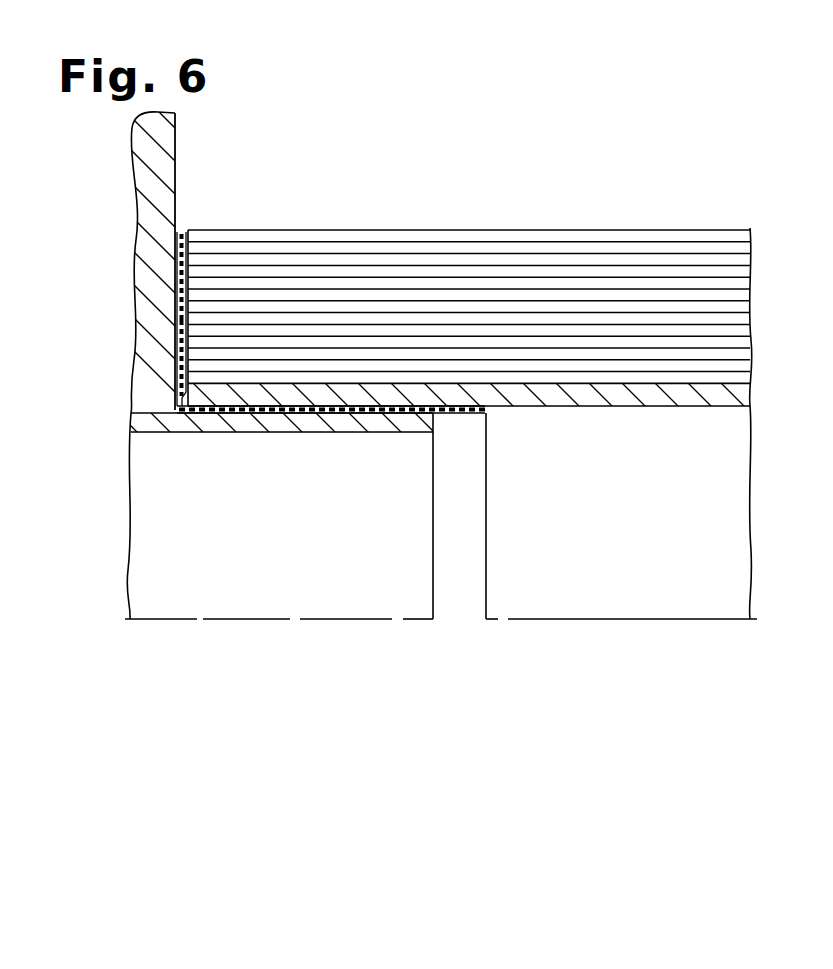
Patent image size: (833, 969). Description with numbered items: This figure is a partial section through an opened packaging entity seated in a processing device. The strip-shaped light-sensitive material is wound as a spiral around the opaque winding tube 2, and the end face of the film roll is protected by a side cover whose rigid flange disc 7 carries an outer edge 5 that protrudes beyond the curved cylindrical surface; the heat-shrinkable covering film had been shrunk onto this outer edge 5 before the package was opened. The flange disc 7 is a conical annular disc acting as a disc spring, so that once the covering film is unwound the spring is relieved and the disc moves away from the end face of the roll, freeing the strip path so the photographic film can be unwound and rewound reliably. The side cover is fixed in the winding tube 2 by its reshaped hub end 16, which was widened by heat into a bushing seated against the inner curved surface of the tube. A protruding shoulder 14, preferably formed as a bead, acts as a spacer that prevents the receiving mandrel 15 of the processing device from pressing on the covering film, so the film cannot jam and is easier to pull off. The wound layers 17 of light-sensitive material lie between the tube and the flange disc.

The winding tube 2 is at (725, 395).
The outer edge 5 is at (178, 231).
The flange disc 7 is at (176, 362).
The protruding shoulder 14 is at (177, 407).
The receiving mandrel 15 is at (148, 213).
The reshaped hub end 16 is at (465, 414).
The layered insulation 17 is at (730, 268).